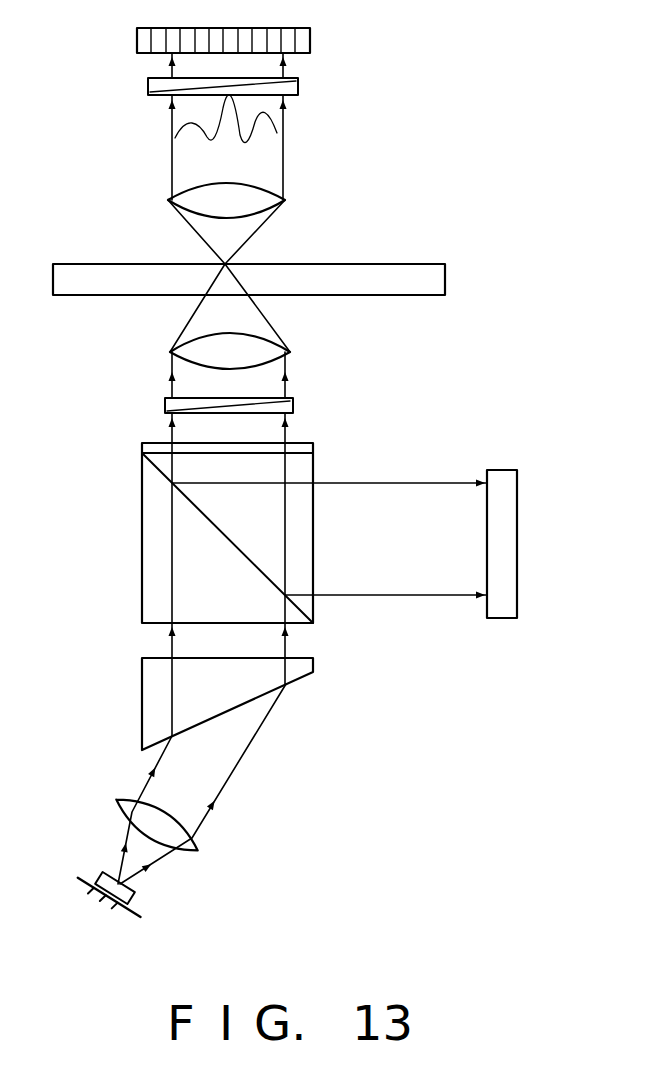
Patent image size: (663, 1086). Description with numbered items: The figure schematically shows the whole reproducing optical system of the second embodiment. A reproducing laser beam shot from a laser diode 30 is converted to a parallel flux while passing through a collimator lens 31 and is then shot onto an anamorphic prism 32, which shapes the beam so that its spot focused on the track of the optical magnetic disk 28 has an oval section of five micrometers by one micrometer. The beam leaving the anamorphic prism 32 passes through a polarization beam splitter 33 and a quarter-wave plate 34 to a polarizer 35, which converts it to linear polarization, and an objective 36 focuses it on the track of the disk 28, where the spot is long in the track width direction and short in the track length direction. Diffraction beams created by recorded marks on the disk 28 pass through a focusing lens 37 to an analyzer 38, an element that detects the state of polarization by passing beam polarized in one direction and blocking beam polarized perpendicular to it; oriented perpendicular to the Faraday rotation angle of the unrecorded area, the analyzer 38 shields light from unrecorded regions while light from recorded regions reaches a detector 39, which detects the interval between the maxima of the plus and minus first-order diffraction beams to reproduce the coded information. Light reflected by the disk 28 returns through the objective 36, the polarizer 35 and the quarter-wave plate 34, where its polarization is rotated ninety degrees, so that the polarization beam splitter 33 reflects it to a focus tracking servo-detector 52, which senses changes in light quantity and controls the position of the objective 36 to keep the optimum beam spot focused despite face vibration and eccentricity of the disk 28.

The optical magnetic disk 28 is at (410, 264).
The laser diode 30 is at (135, 900).
The collimator lens 31 is at (198, 846).
The anamorphic prism 32 is at (305, 678).
The polarization beam splitter 33 is at (142, 515).
The quarter-wave plate 34 is at (142, 452).
The polarizer 35 is at (165, 403).
The objective 36 is at (170, 350).
The focusing lens 37 is at (285, 200).
The analyzer 38 is at (300, 86).
The detector 39 is at (312, 41).
The focus tracking servo-detector 52 is at (506, 470).